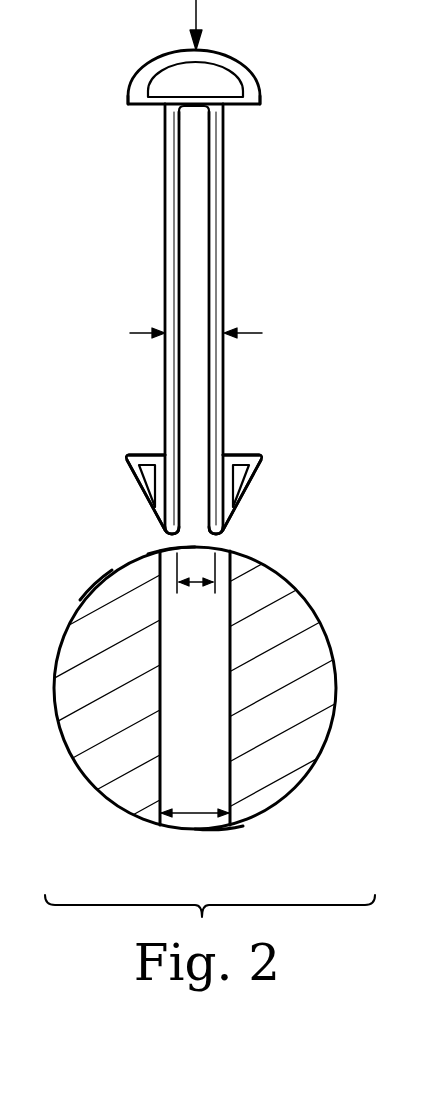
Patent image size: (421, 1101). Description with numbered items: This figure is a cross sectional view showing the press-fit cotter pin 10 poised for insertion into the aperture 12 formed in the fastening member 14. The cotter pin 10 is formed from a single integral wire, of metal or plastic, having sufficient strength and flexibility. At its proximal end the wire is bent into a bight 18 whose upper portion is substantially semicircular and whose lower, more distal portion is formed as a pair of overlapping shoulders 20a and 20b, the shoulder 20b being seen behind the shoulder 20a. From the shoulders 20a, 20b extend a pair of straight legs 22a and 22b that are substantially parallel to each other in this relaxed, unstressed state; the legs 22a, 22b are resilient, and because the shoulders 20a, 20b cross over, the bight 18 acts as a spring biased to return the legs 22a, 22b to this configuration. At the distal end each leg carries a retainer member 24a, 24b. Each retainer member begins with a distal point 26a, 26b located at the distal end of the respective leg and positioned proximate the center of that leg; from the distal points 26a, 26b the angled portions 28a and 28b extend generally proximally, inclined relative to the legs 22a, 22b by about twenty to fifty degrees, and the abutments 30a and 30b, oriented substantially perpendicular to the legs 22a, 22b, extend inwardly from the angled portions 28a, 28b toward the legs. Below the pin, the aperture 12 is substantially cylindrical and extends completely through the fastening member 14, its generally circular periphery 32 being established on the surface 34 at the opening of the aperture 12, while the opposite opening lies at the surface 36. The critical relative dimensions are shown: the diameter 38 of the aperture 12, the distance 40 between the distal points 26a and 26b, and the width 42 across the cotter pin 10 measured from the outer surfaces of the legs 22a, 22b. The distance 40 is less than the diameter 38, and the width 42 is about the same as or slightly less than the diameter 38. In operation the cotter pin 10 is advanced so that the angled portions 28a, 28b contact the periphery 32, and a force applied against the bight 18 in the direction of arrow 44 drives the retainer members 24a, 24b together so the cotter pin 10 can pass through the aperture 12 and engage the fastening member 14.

The press-fit cotter pin 10 is at (302, 201).
The aperture 12 is at (182, 733).
The fastening member 14 is at (302, 598).
The bight 18 is at (233, 58).
The shoulder 20a is at (240, 113).
The shoulder 20b is at (142, 110).
The leg 22a is at (165, 207).
The leg 22b is at (225, 245).
The retainer member 24a is at (118, 460).
The retainer member 24b is at (270, 460).
The distal point 26a is at (163, 530).
The distal point 26b is at (226, 530).
The angled portion 28a is at (140, 482).
The angled portion 28b is at (252, 482).
The abutment 30a is at (152, 453).
The abutment 30b is at (238, 453).
The periphery 32 is at (147, 555).
The surface 34 is at (112, 570).
The surface 36 is at (243, 826).
The diameter 38 is at (195, 814).
The distance 40 is at (195, 584).
The width 42 is at (257, 333).
The arrow 44 is at (193, 13).